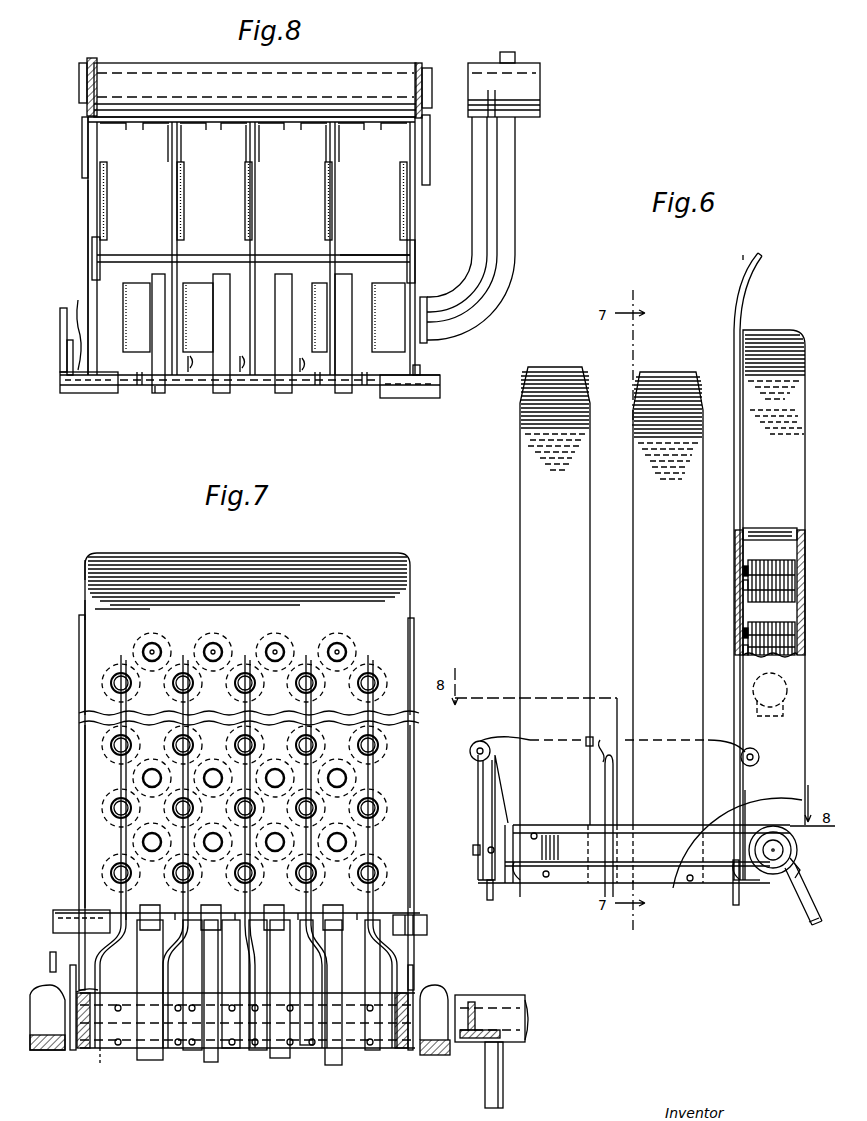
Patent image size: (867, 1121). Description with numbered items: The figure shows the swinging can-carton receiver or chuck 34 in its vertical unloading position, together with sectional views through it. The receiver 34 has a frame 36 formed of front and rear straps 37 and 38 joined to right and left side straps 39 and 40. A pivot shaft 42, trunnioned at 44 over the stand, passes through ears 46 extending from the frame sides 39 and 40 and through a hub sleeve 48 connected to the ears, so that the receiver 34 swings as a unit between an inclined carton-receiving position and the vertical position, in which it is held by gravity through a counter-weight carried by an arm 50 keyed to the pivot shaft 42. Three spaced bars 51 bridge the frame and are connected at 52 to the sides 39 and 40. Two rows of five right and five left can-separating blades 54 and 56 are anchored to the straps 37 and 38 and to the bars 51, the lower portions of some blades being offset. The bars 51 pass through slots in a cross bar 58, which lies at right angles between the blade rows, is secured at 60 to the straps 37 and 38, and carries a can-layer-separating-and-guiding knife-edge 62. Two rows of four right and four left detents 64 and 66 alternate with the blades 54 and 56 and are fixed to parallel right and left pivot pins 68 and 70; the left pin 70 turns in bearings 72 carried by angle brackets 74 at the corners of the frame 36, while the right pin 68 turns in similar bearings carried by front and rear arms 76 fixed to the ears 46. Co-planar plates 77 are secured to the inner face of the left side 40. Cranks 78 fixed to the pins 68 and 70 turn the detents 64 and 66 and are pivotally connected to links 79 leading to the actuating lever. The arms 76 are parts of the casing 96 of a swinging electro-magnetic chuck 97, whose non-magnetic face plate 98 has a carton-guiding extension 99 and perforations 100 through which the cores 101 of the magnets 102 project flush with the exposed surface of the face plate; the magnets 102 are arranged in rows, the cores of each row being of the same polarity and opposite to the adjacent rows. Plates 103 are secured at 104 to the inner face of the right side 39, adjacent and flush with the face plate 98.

In FIG. 7, the swinging can-carton receiver or chuck 34 is at (78, 561).
In FIG. 6, the swinging can-carton receiver or chuck 34 is at (779, 268).
In FIG. 8, the frame 36 is at (423, 193).
In FIG. 7, the frame 36 is at (410, 1053).
In FIG. 8, the front strap 37 is at (423, 290).
In FIG. 7, the front strap 37 is at (400, 1050).
In FIG. 6, the front strap 37 is at (540, 905).
In FIG. 8, the rear strap 38 is at (88, 226).
In FIG. 7, the rear strap 38 is at (82, 1050).
In FIG. 8, the right side strap 39 is at (77, 140).
In FIG. 7, the right side strap 39 is at (222, 1050).
In FIG. 6, the right side strap 39 is at (742, 884).
In FIG. 8, the left side strap 40 is at (160, 390).
In FIG. 6, the left side strap 40 is at (480, 830).
In FIG. 7, the pivot shaft 42 is at (108, 1055).
In FIG. 6, the pivot shaft 42 is at (798, 848).
In FIG. 7, the trunnion 44 is at (78, 990).
In FIG. 8, the ears 46 is at (82, 165).
In FIG. 7, the ears 46 is at (70, 972).
In FIG. 8, the hub sleeve 48 is at (210, 70).
In FIG. 7, the hub sleeve 48 is at (45, 1050).
In FIG. 6, the hub sleeve 48 is at (798, 866).
In FIG. 8, the arm 50 is at (518, 56).
In FIG. 7, the arm 50 is at (503, 1067).
In FIG. 6, the arm 50 is at (795, 905).
In FIG. 8, the spaced bars 51 is at (170, 148).
In FIG. 7, the spaced bars 51 is at (160, 1045).
In FIG. 8, the bar connection 52 is at (235, 131).
In FIG. 7, the bar connection 52 is at (190, 1052).
In FIG. 8, the right can-separating blades 54 is at (108, 203).
In FIG. 7, the right can-separating blades 54 is at (152, 740).
In FIG. 6, the right can-separating blades 54 is at (645, 382).
In FIG. 8, the left can-separating blades 56 is at (148, 284).
In FIG. 6, the left can-separating blades 56 is at (566, 360).
In FIG. 8, the cross bar 58 is at (376, 251).
In FIG. 6, the cross bar 58 is at (596, 802).
In FIG. 8, the cross bar securing point 60 is at (92, 268).
In FIG. 6, the cross bar securing point 60 is at (630, 856).
In FIG. 8, the knife-edge 62 is at (283, 256).
In FIG. 6, the knife-edge 62 is at (600, 737).
In FIG. 7, the right detents 64 is at (148, 908).
In FIG. 6, the right detents 64 is at (712, 738).
In FIG. 8, the left detents 66 is at (152, 330).
In FIG. 6, the left detents 66 is at (505, 738).
In FIG. 7, the right pivot pin 68 is at (430, 924).
In FIG. 6, the right pivot pin 68 is at (756, 748).
In FIG. 8, the left pivot pin 70 is at (235, 388).
In FIG. 6, the left pivot pin 70 is at (478, 762).
In FIG. 8, the bearings 72 is at (395, 402).
In FIG. 8, the angle brackets 74 is at (422, 372).
In FIG. 6, the angle brackets 74 is at (485, 797).
In FIG. 8, the front and rear arms 76 is at (92, 60).
In FIG. 7, the front and rear arms 76 is at (79, 656).
In FIG. 6, the front and rear arms 76 is at (790, 472).
In FIG. 8, the co-planar plates 77 is at (140, 388).
In FIG. 6, the co-planar plates 77 is at (491, 900).
In FIG. 8, the cranks 78 is at (67, 352).
In FIG. 7, the cranks 78 is at (50, 945).
In FIG. 8, the links 79 is at (60, 322).
In FIG. 7, the links 79 is at (50, 961).
In FIG. 6, the casing 96 is at (810, 580).
In FIG. 7, the swinging electro-magnetic chuck 97 is at (80, 600).
In FIG. 6, the swinging electro-magnetic chuck 97 is at (782, 318).
In FIG. 7, the non-magnetic face plate 98 is at (412, 618).
In FIG. 6, the non-magnetic face plate 98 is at (742, 440).
In FIG. 7, the carton-guiding extension 99 is at (366, 555).
In FIG. 6, the carton-guiding extension 99 is at (752, 264).
In FIG. 7, the perforations 100 is at (225, 640).
In FIG. 6, the perforations 100 is at (743, 586).
In FIG. 7, the pin 101 is at (337, 643).
In FIG. 6, the pin 101 is at (743, 572).
In FIG. 7, the magnets 102 is at (205, 638).
In FIG. 6, the magnets 102 is at (780, 550).
In FIG. 8, the plates 103 is at (140, 128).
In FIG. 7, the plates 103 is at (135, 968).
In FIG. 6, the plates 103 is at (740, 900).
In FIG. 7, the plate securing point 104 is at (270, 1080).